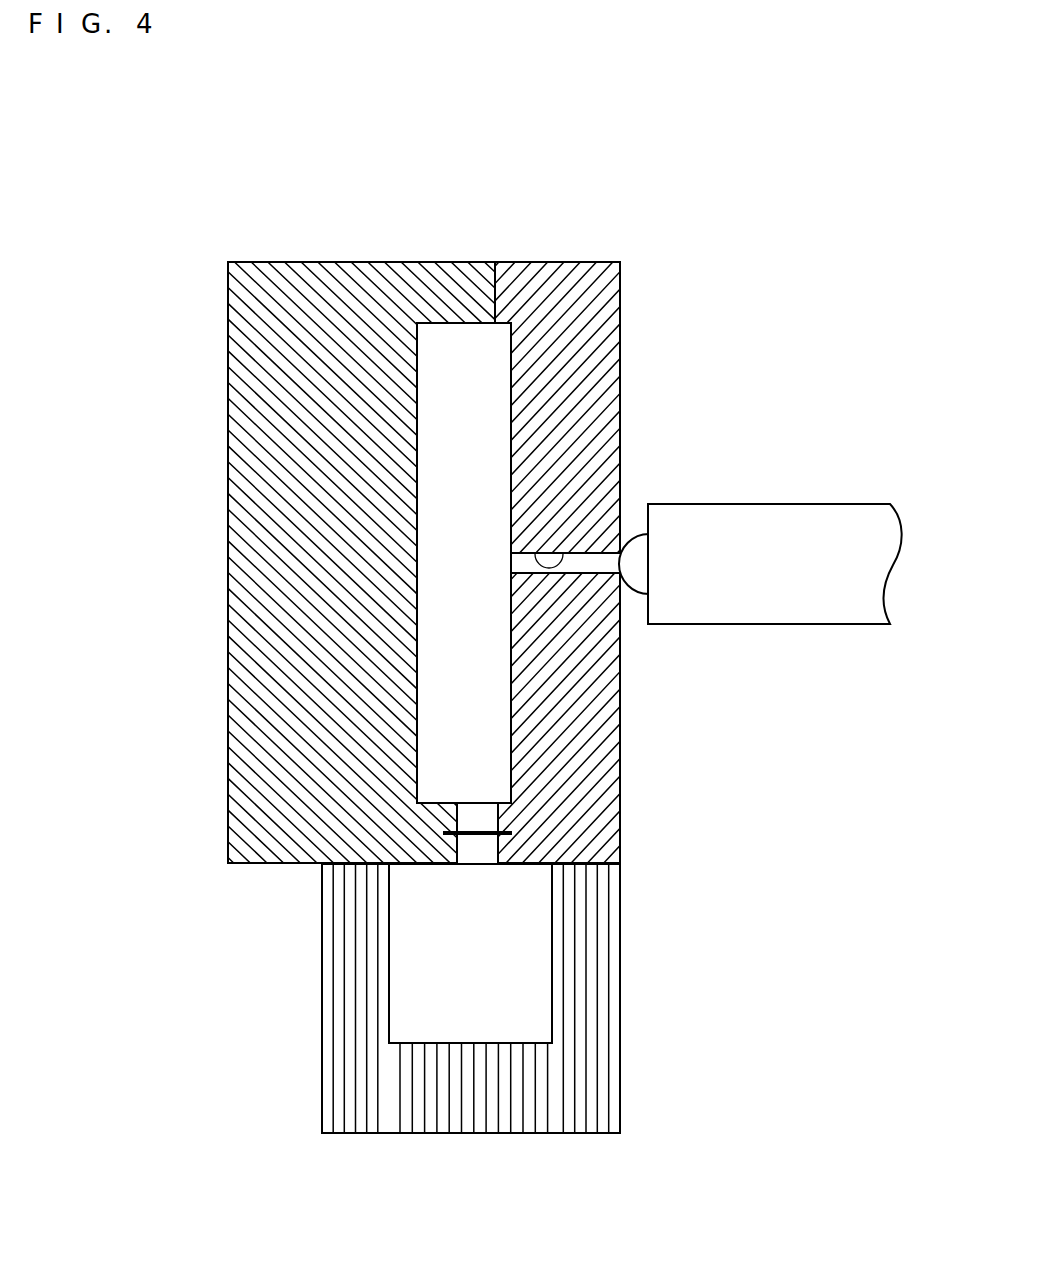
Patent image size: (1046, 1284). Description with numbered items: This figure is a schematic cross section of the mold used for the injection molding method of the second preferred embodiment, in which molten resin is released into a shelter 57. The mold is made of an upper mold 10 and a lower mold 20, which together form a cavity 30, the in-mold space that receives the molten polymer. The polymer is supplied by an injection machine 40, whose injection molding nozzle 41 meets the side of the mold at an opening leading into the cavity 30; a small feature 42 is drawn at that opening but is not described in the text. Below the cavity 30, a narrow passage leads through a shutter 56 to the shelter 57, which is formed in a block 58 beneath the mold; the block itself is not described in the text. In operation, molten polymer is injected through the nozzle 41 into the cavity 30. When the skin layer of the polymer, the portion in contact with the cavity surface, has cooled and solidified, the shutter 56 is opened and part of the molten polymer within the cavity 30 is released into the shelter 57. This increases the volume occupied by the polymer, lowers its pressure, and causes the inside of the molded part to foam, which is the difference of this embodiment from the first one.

The upper mold 10 is at (588, 840).
The lower mold 20 is at (240, 828).
The cavity 30 is at (473, 487).
The injection machine 40 is at (798, 582).
The injection molding nozzle 41 is at (647, 594).
The protrusion 42 is at (563, 556).
The shutter 56 is at (478, 828).
The shelter 57 is at (487, 969).
The lower block 58 is at (595, 1016).